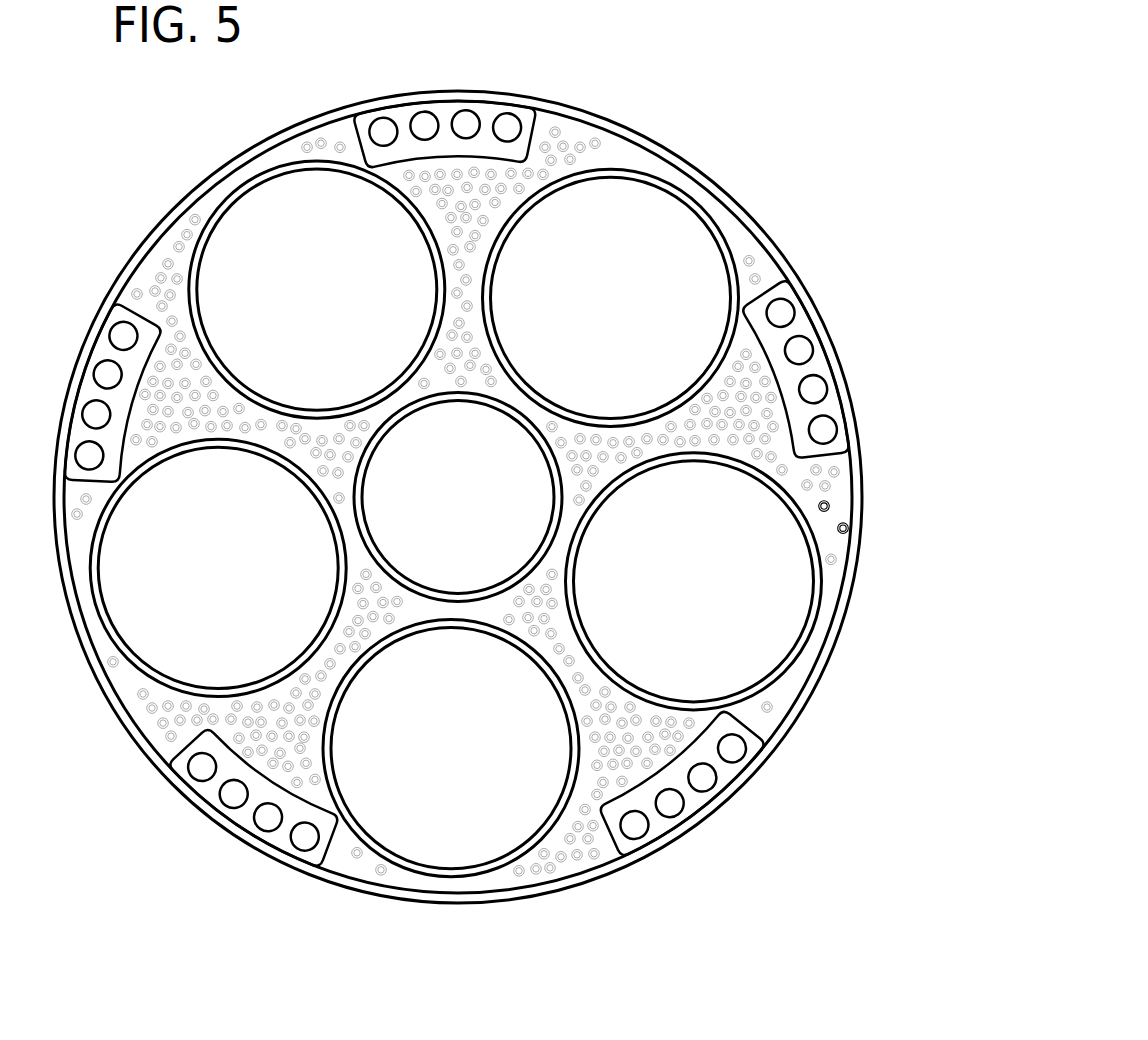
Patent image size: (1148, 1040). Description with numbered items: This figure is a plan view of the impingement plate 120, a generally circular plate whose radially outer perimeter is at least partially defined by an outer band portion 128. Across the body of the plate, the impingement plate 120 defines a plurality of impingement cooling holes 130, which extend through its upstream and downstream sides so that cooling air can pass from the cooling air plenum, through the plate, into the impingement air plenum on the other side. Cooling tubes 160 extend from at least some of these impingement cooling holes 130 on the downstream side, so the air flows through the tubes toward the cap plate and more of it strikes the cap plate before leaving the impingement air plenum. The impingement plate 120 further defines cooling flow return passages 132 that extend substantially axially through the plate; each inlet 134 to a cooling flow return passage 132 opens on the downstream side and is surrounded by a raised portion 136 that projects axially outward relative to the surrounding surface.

The impingement plate 120 is at (728, 160).
The outer band portion 128 is at (870, 626).
The impingement cooling holes 130 is at (828, 506).
The cooling tubes 160 is at (826, 504).
The raised portion 136 is at (742, 728).
The cooling flow return passage 132 is at (707, 780).
The inlet 134 is at (678, 805).